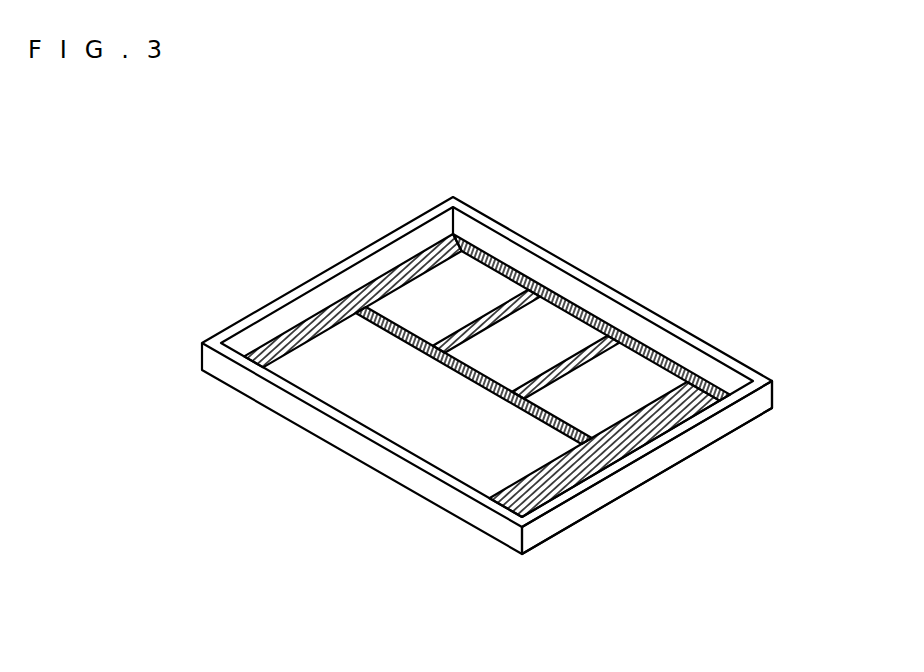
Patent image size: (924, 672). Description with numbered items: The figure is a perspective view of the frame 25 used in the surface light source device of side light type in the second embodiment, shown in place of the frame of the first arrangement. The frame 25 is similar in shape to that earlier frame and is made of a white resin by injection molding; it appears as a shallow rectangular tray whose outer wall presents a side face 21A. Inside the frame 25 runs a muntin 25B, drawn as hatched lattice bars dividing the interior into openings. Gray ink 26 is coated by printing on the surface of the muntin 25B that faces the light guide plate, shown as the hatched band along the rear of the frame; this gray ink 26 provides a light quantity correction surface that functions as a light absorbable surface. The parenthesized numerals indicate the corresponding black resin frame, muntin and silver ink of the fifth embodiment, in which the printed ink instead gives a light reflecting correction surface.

The frame 25 is at (293, 408).
The side face 21A is at (662, 455).
The gray ink 26 is at (294, 336).
The muntin 25B is at (545, 490).